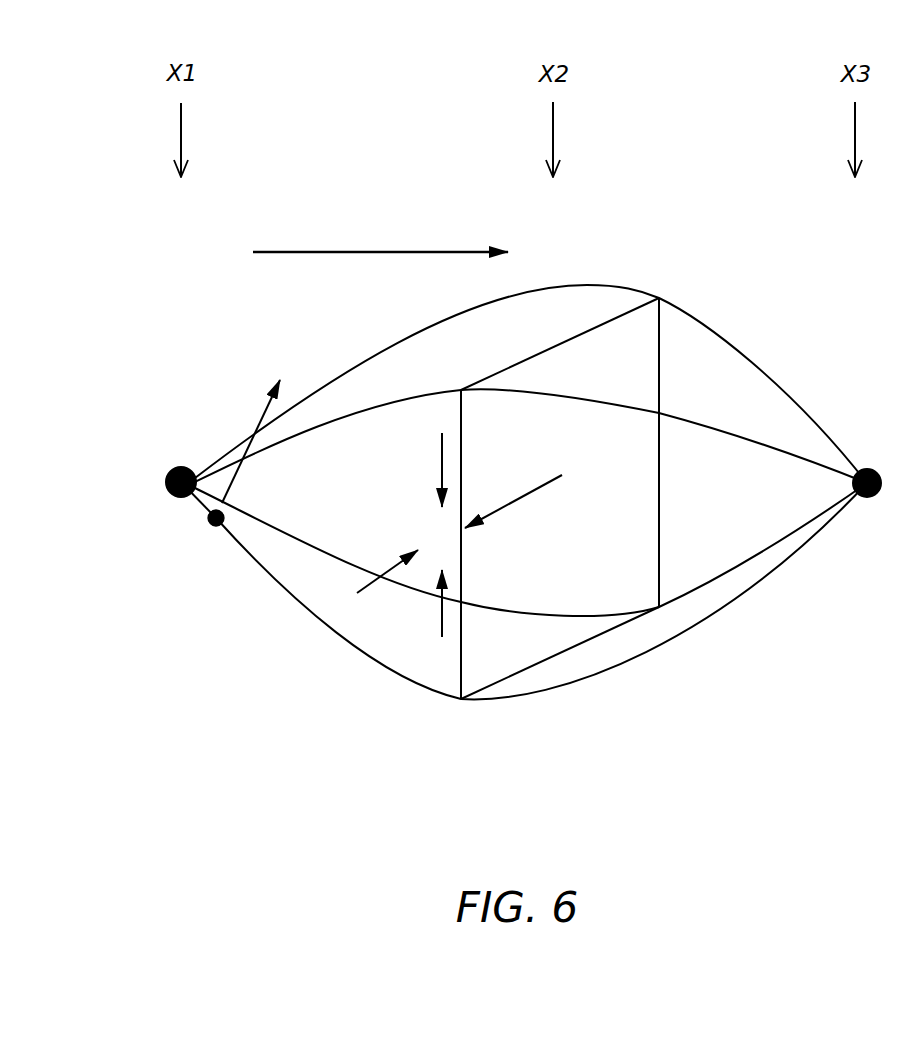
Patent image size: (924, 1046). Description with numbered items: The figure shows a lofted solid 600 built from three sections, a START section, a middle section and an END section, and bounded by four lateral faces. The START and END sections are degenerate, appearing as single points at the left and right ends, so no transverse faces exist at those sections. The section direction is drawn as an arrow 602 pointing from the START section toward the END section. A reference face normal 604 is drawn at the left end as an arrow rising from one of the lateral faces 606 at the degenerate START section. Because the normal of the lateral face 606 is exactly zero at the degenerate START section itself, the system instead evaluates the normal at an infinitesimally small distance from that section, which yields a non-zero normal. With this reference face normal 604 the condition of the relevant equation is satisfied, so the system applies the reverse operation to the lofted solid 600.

The lofted solid 600 is at (260, 657).
The section direction arrow 602 is at (380, 223).
The reference face normal 604 is at (243, 425).
The lateral face 606 is at (265, 557).